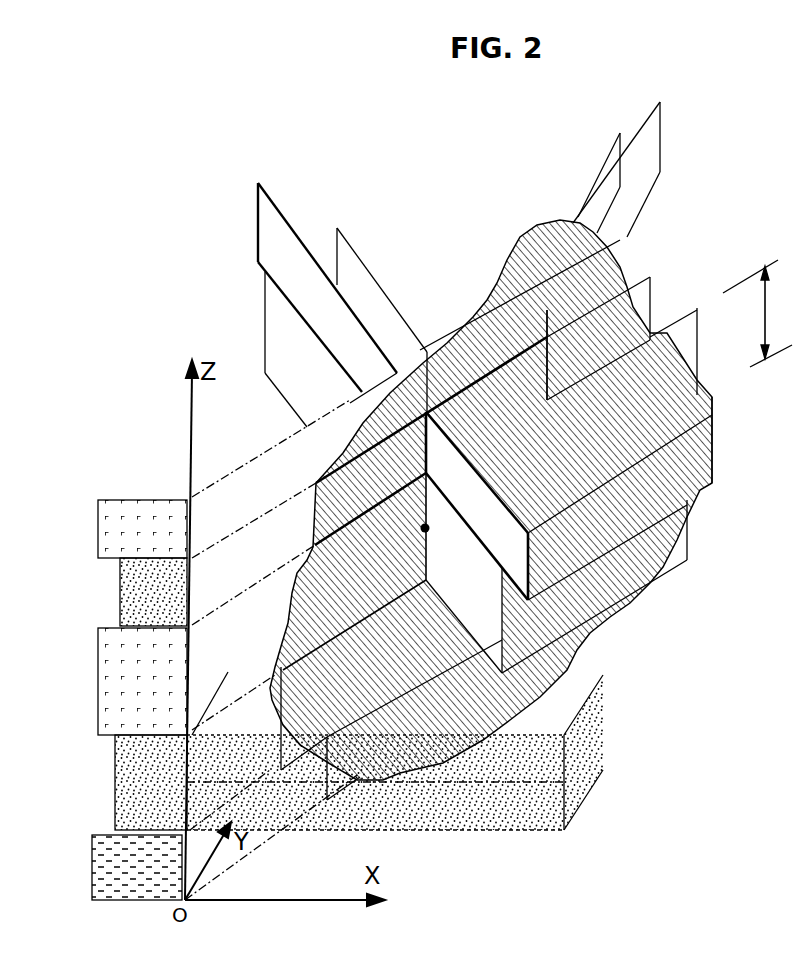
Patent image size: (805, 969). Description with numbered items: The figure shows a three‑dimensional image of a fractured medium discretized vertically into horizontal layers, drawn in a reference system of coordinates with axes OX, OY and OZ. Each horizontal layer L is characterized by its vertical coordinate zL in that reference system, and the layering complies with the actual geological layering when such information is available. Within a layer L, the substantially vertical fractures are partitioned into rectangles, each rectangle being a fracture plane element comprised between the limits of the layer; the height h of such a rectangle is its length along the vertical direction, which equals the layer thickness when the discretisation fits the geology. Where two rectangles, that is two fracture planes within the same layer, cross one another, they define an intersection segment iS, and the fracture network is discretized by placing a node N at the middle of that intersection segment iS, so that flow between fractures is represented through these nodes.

The horizontal layer L is at (612, 756).
The vertical coordinate of the layer zL is at (98, 777).
The intersection segment iS is at (438, 456).
The node N is at (392, 573).
The height of the rectangle h is at (757, 313).